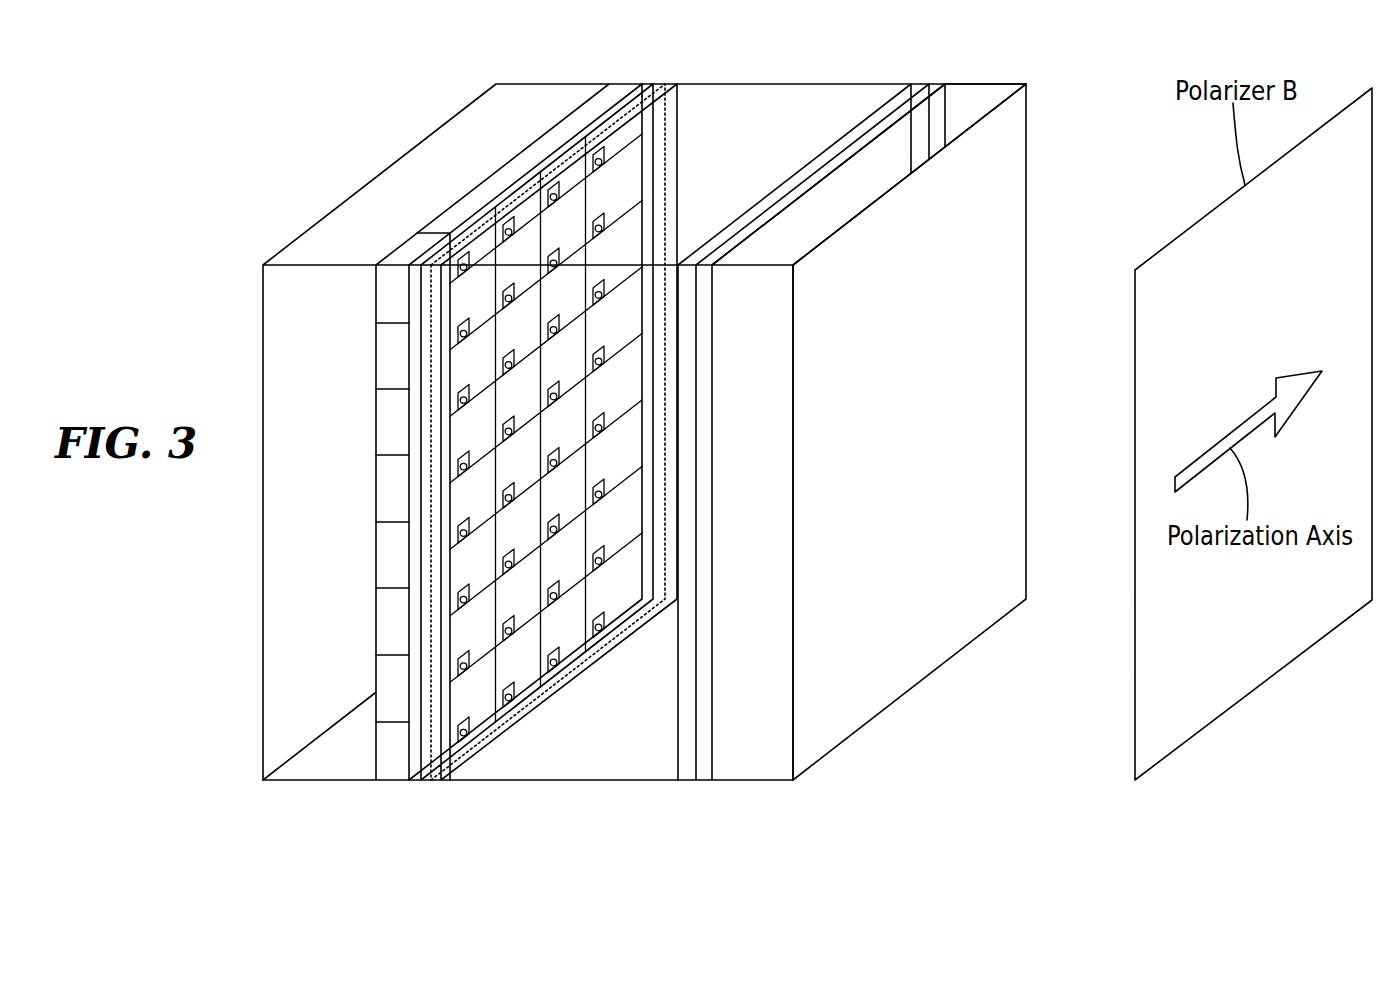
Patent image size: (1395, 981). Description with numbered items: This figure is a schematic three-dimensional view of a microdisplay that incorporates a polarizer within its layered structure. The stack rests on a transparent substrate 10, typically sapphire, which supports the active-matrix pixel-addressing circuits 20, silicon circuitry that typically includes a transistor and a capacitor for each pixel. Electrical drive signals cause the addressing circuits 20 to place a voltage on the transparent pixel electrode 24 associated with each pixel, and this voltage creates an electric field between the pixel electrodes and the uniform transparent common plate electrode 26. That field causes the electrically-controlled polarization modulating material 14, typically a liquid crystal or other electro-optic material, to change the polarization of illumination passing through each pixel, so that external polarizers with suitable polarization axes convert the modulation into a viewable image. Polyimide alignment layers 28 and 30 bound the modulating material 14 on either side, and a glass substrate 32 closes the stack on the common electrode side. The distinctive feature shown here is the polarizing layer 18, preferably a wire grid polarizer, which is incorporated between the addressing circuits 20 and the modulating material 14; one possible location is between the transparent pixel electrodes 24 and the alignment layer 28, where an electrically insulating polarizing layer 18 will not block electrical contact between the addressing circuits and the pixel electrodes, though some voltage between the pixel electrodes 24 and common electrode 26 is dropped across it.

The transparent substrate 10 is at (430, 173).
The polarization modulating material 14 is at (766, 127).
The polarizing layer 18 is at (427, 752).
The active-matrix pixel-addressing circuits 20 is at (382, 747).
The transparent pixel electrode 24 is at (405, 753).
The transparent common plate electrode 26 is at (705, 767).
The polyimide alignment layer 28 is at (493, 740).
The polyimide alignment layer 30 is at (684, 767).
The glass substrate 32 is at (1008, 177).